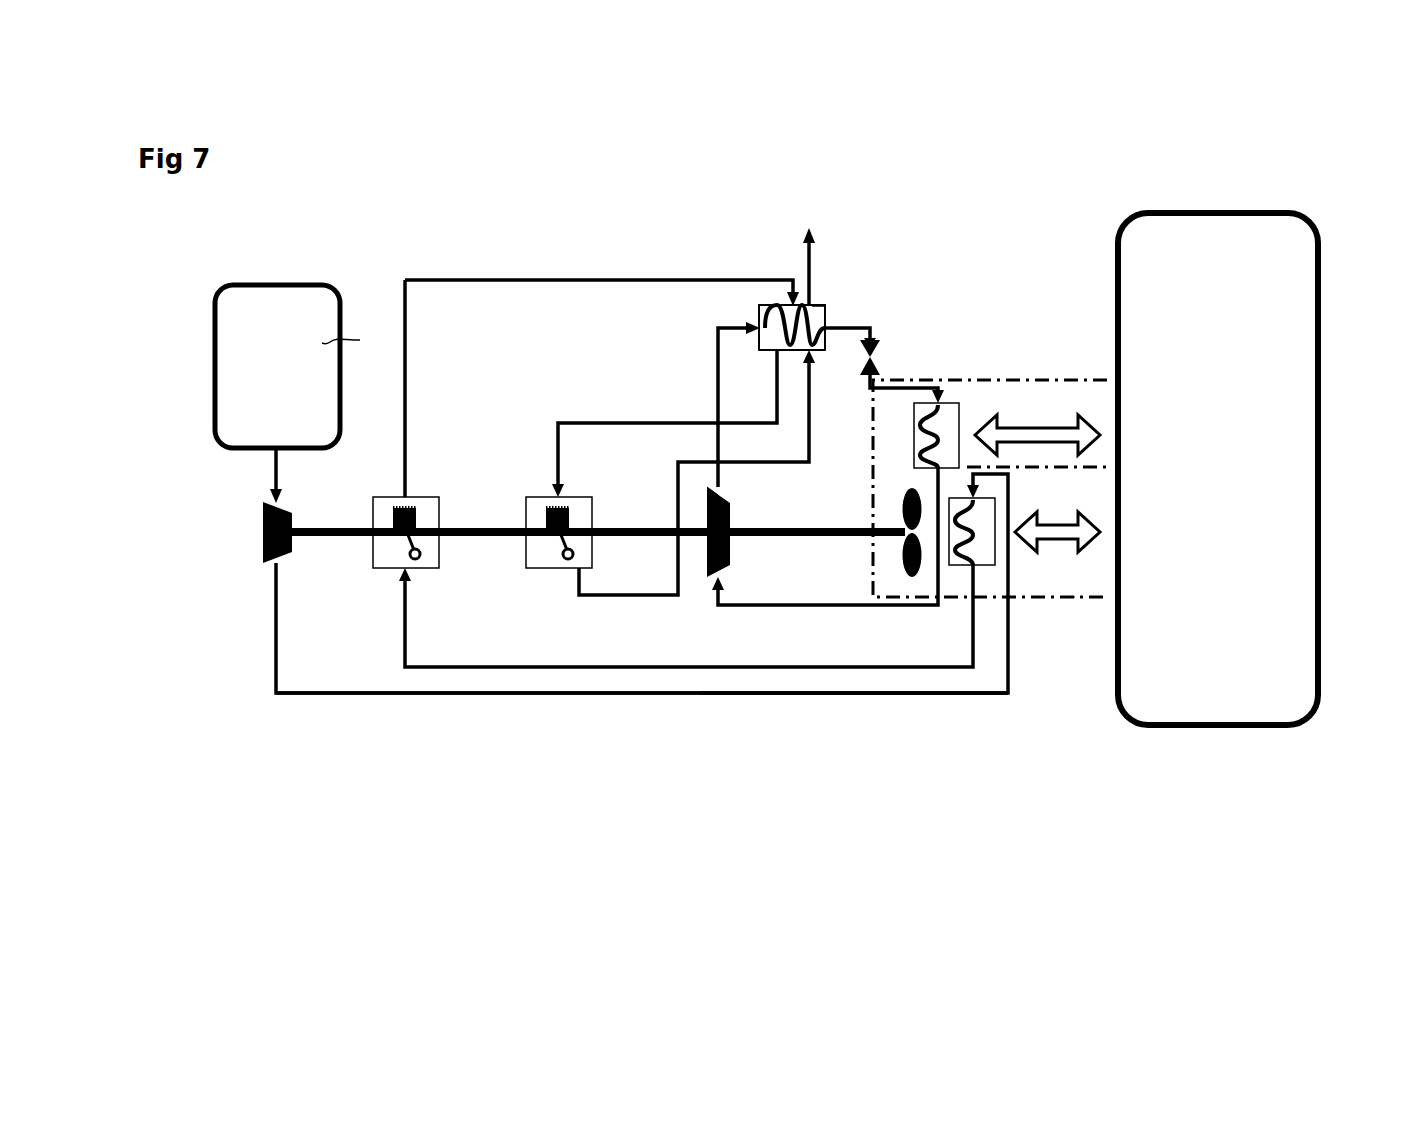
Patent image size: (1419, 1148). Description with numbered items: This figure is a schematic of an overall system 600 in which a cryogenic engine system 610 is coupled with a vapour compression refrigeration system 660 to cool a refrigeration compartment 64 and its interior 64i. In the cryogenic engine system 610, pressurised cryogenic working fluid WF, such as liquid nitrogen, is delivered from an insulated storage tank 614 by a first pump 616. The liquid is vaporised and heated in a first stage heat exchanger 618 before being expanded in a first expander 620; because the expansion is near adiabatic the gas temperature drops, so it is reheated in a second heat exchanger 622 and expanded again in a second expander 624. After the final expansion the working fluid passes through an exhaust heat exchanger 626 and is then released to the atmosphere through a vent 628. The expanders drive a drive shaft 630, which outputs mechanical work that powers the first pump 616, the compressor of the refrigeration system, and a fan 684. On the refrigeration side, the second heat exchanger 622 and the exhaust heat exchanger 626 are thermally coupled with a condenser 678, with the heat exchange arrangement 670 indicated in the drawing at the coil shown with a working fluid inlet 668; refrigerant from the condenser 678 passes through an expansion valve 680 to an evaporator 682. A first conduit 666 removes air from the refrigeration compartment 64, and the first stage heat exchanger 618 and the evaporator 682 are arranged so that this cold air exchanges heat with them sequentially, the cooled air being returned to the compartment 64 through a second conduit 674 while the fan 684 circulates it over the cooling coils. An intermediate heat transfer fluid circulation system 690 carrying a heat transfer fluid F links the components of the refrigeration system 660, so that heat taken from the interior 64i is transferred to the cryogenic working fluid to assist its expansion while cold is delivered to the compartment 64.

The insulated storage tank 614 is at (315, 302).
The first pump 616 is at (263, 536).
The cryogenic engine system 610 is at (530, 718).
The first expander 620 is at (425, 505).
The second expander 624 is at (528, 503).
The drive shaft 630 is at (623, 525).
The turbine inlet 668 is at (713, 498).
The second heat exchanger 622 is at (822, 313).
The exhaust heat exchanger 626 is at (792, 327).
The heat exchanger unit 670 is at (792, 327).
The condenser 678 is at (813, 310).
The vent 628 is at (810, 253).
The intermediate heat transfer fluid circulation system 690 is at (772, 608).
The expansion valve 680 is at (873, 350).
The first conduit 666 is at (1037, 390).
The evaporator 682 is at (957, 405).
The first stage heat exchanger 618 is at (985, 553).
The fan 684 is at (912, 572).
The second conduit 674 is at (1067, 579).
The system 600 is at (664, 721).
The vapour compression refrigeration system 660 is at (810, 730).
The refrigeration compartment 64 is at (1178, 232).
The interior of refrigeration compartment 64i is at (1225, 233).